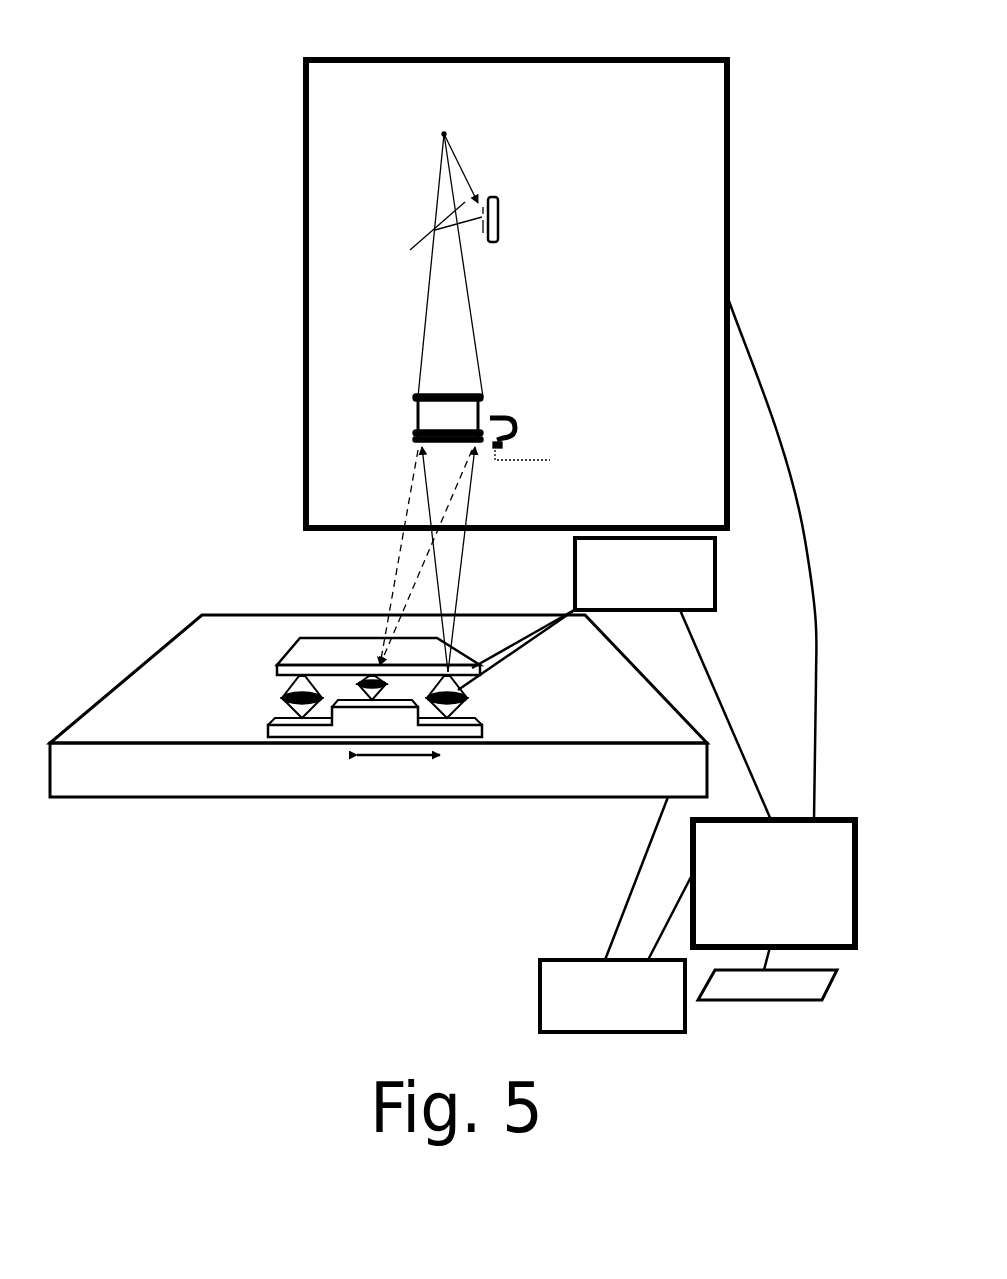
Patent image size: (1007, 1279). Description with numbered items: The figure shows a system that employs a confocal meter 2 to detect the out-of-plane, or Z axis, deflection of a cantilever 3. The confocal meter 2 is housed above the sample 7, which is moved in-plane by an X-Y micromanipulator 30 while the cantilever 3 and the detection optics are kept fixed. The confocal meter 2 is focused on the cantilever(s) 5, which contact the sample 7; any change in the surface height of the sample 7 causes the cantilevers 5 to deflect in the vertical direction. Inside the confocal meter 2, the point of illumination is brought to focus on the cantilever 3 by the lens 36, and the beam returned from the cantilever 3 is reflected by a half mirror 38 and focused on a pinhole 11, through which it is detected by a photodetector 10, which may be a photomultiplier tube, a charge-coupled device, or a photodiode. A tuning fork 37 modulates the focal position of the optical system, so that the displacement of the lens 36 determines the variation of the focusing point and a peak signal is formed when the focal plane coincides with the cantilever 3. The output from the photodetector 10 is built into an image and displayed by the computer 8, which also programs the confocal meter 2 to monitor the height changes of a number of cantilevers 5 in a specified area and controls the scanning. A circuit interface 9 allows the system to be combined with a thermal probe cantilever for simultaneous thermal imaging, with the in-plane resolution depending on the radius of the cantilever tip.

The confocal meter 2 is at (306, 170).
The cantilever 3 is at (280, 662).
The cantilevers 5 is at (343, 680).
The sample 7 is at (363, 730).
The computer interface 8 is at (742, 993).
The circuit interface 9 is at (720, 563).
The photodetector 10 is at (500, 217).
The pinhole 11 is at (444, 134).
The X-Y micromanipulator 30 is at (183, 773).
The lens 36 is at (407, 425).
The tuning fork 37 is at (532, 417).
The half mirror 38 is at (415, 238).